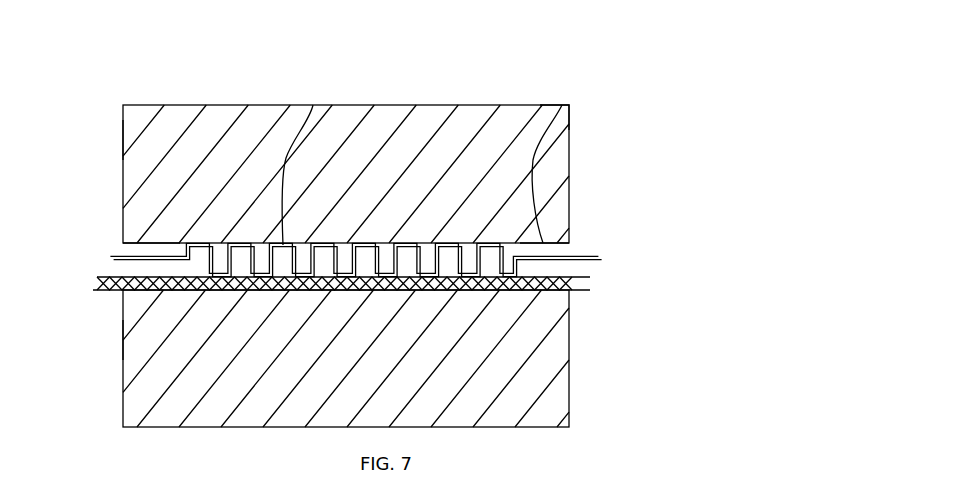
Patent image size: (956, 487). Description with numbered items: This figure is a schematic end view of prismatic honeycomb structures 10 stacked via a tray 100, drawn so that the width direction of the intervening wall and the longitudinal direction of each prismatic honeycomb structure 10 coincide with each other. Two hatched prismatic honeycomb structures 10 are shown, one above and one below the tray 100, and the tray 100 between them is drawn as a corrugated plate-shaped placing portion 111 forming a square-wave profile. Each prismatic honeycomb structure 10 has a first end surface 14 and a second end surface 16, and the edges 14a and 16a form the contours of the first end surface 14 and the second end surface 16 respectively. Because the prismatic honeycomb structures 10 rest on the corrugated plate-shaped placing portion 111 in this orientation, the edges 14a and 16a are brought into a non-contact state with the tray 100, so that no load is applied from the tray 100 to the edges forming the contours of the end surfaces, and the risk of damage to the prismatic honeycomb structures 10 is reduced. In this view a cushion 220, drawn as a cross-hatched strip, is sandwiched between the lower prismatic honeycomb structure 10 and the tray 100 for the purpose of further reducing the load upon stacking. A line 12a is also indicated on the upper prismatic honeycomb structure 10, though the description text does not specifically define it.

The prismatic honeycomb structure 10 is at (577, 114).
The bond line / interface 12a is at (562, 105).
The first end surface 14 is at (123, 140).
The edge 14a is at (123, 243).
The second end surface 16 is at (569, 158).
The edge 16a is at (569, 243).
The tray 100 is at (607, 258).
The corrugated plate-shaped placing portion 111 is at (313, 105).
The cushion 220 is at (585, 290).